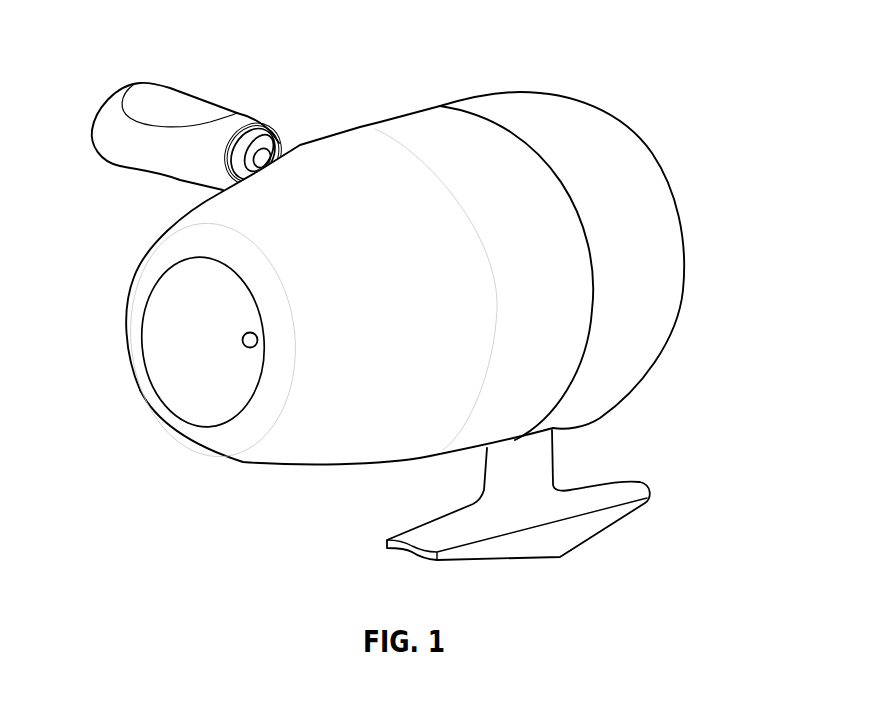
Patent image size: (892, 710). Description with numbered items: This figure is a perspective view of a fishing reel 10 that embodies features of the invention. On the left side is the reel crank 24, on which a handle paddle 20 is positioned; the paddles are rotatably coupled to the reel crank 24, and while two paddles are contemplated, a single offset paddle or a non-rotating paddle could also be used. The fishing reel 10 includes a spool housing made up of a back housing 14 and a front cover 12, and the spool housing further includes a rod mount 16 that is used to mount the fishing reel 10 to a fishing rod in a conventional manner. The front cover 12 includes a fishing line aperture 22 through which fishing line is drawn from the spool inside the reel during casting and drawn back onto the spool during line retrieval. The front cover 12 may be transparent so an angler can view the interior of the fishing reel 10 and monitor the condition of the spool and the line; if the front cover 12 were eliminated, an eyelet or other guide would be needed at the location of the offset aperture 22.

The fishing reel 10 is at (740, 114).
The front cover 12 is at (367, 417).
The back housing 14 is at (663, 230).
The rod mount 16 is at (577, 527).
The handle paddle 20 is at (183, 105).
The fishing line aperture 22 is at (243, 342).
The reel crank 24 is at (283, 147).